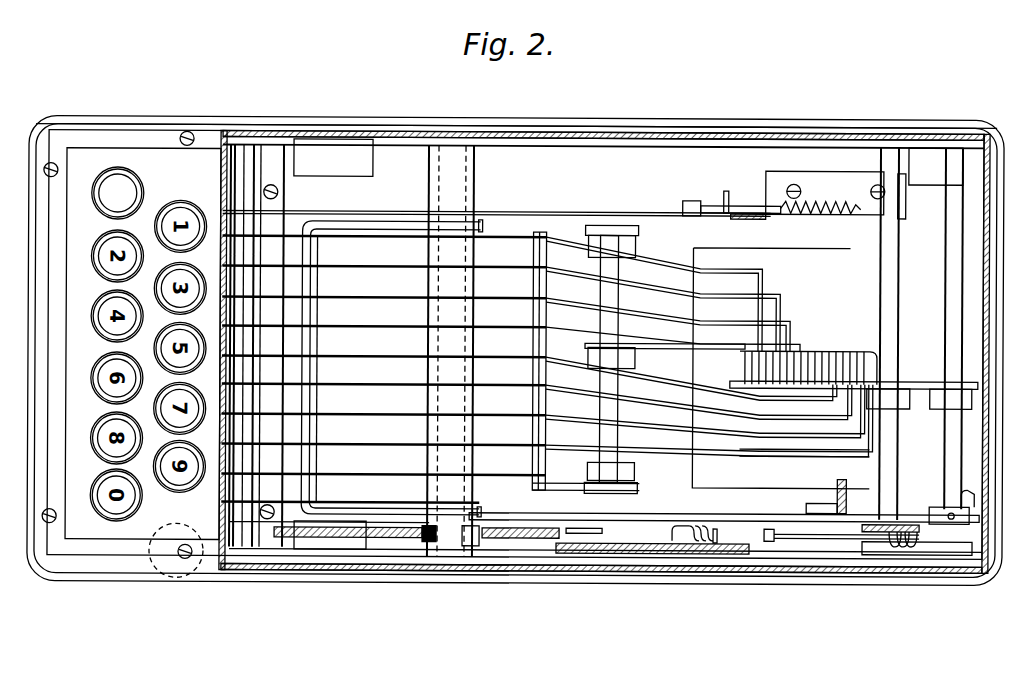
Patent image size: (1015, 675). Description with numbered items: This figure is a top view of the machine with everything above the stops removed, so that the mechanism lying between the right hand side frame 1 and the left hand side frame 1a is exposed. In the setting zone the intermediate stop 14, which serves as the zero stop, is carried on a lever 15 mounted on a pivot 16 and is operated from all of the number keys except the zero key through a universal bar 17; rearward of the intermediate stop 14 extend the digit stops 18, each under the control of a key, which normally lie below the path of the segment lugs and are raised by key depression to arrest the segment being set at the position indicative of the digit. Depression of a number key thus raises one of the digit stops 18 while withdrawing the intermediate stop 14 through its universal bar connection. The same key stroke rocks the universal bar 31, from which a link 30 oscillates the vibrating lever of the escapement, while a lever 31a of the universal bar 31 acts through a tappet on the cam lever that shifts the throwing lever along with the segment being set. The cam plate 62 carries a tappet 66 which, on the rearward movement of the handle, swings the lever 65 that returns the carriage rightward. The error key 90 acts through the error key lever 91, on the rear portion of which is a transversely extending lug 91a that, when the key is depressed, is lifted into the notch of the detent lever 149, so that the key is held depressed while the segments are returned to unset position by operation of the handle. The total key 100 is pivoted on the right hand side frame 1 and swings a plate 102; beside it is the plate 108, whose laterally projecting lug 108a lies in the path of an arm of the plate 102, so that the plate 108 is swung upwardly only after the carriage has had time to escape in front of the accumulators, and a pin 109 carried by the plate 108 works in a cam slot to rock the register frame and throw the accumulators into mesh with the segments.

The right hand side frame 1 is at (808, 555).
The left hand side frame 1a is at (780, 147).
The intermediate stop 14 is at (742, 348).
The lever 15 is at (658, 345).
The pivot 16 is at (600, 320).
The universal bar 17 is at (533, 233).
The digit stops 18 is at (806, 352).
The link 30 is at (838, 481).
The universal bar 31 is at (318, 460).
The lever 31a is at (634, 513).
The cam plate 62 is at (662, 553).
The lever 65 is at (848, 540).
The tappet 66 is at (766, 536).
The error key 90 is at (138, 192).
The error key lever 91 is at (553, 213).
The transversely extending lug 91a is at (690, 200).
The total key 100 is at (150, 578).
The plate 102 is at (405, 538).
The plate 108 is at (540, 538).
The laterally projecting lug 108a is at (470, 546).
The pin 109 is at (605, 553).
The detent lever 149 is at (726, 215).